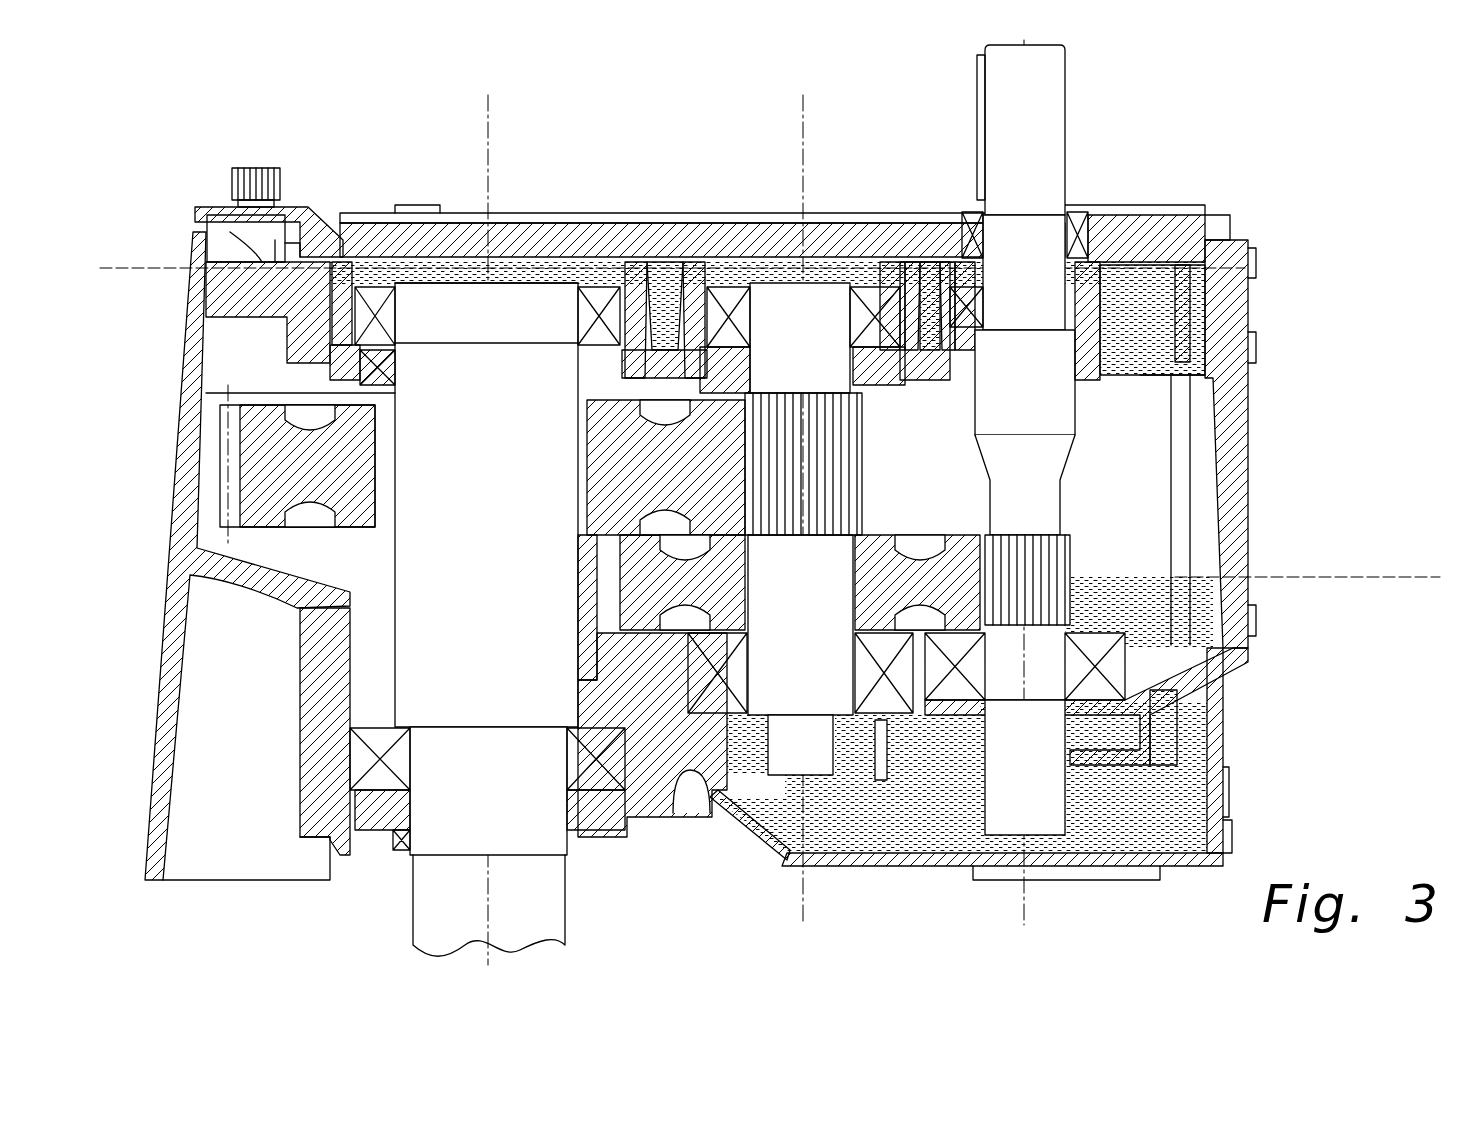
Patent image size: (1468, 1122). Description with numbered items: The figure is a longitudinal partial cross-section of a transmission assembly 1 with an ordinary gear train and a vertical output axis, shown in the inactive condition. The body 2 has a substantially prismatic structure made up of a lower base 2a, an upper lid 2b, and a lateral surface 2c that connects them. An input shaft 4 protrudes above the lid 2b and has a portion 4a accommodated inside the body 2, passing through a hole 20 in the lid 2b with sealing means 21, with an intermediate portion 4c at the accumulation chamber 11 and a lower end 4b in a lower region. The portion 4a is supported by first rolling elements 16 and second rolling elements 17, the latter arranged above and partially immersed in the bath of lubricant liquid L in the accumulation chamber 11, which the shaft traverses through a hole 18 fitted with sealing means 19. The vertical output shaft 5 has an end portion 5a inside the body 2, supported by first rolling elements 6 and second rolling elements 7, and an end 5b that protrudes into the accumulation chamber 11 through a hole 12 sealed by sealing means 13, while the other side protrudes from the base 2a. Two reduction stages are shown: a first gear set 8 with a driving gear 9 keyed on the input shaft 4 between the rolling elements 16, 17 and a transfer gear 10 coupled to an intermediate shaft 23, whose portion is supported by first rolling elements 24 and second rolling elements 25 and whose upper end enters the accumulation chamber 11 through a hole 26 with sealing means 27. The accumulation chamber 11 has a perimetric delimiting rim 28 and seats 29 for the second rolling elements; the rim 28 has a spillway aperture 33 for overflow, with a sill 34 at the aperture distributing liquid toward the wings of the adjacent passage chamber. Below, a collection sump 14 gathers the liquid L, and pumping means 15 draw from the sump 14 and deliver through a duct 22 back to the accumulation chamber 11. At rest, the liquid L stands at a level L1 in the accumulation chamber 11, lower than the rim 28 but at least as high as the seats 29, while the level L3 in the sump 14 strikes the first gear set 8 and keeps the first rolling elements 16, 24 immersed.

The transmission assembly 1 is at (1258, 167).
The body 2 is at (724, 536).
The lower base 2a is at (832, 868).
The upper lid 2b is at (565, 222).
The lateral surface 2c is at (187, 468).
The input shaft 4 is at (1041, 290).
The portion of input shaft 4a is at (1072, 492).
The end of input shaft 4b is at (1080, 765).
The intermediate portion of input shaft 4c is at (1008, 230).
The output shaft 5 is at (390, 895).
The end portion of output shaft 5a is at (360, 538).
The end of output shaft 5b is at (532, 282).
The first rolling elements 6 is at (365, 757).
The second rolling elements 7 is at (380, 290).
The first gear set 8 is at (965, 634).
The driving gear 9 is at (1035, 572).
The transfer gear 10 is at (920, 590).
The accumulation chamber 11 is at (655, 263).
The hole 12 is at (392, 373).
The sealing means 13 is at (367, 363).
The collection sump 14 is at (1190, 797).
The pumping means 15 is at (1053, 820).
The first rolling elements 16 is at (1115, 665).
The second rolling elements 17 is at (1125, 316).
The hole 18 is at (1083, 385).
The sealing means 19 is at (1185, 368).
The hole 20 is at (1100, 258).
The sealing means 21 is at (1073, 230).
The duct 22 is at (1185, 540).
The intermediate shaft 23 is at (755, 795).
The first rolling elements 24 is at (887, 735).
The second rolling elements 25 is at (878, 265).
The hole 26 is at (875, 390).
The sealing means 27 is at (872, 380).
The perimetric delimiting rim 28 is at (290, 248).
The seat 29 is at (345, 262).
The spillway aperture 33 is at (300, 247).
The sill 34 is at (210, 232).
The lubricant liquid L is at (663, 262).
The level L1 is at (132, 268).
The level L3 is at (1420, 577).